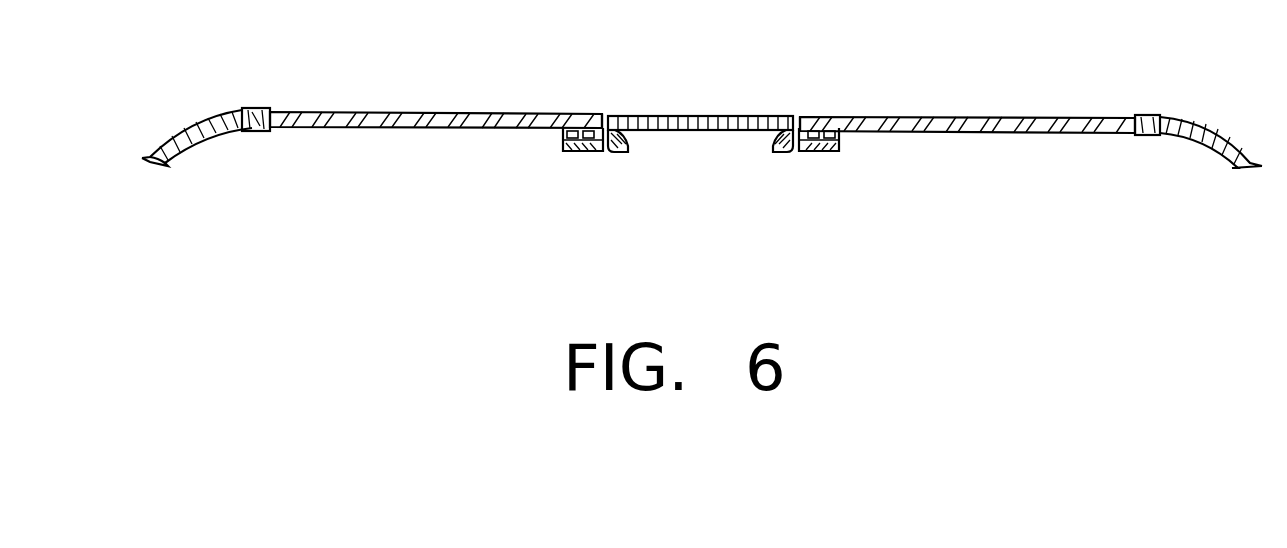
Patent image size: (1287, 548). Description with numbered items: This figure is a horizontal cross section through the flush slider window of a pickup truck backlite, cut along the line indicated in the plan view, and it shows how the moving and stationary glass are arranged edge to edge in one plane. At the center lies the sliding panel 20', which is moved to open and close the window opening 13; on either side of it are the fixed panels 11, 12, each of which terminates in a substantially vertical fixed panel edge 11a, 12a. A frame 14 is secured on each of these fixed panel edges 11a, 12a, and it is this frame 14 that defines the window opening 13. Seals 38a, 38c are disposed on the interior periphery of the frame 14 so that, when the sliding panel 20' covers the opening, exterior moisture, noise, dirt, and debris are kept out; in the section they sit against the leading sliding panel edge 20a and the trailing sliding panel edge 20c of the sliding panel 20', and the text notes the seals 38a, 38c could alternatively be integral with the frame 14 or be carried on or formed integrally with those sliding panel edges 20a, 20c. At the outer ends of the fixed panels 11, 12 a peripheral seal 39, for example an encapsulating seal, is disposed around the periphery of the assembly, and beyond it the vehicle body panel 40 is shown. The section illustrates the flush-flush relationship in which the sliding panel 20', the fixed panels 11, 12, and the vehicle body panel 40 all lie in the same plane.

The fixed panel 11 is at (403, 111).
The fixed panel 12 is at (978, 117).
The sliding panel 20' is at (700, 92).
The fixed panel edge 11a is at (562, 132).
The fixed panel edge 12a is at (835, 133).
The window opening 13 is at (697, 183).
The frame 14 is at (560, 140).
The leading sliding panel edge 20a is at (781, 153).
The trailing sliding panel edge 20c is at (620, 153).
The seal 38a is at (838, 150).
The seal 38c is at (566, 150).
The peripheral seal 39 is at (262, 130).
The vehicle body panel 40 is at (202, 115).